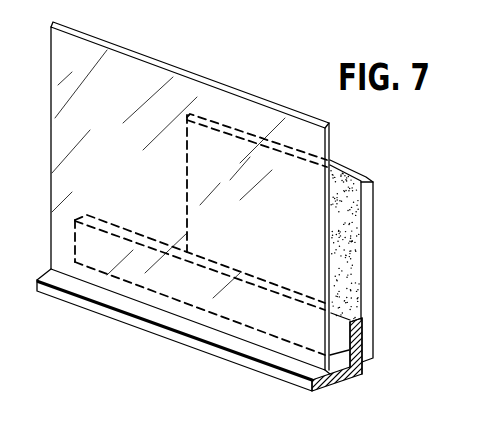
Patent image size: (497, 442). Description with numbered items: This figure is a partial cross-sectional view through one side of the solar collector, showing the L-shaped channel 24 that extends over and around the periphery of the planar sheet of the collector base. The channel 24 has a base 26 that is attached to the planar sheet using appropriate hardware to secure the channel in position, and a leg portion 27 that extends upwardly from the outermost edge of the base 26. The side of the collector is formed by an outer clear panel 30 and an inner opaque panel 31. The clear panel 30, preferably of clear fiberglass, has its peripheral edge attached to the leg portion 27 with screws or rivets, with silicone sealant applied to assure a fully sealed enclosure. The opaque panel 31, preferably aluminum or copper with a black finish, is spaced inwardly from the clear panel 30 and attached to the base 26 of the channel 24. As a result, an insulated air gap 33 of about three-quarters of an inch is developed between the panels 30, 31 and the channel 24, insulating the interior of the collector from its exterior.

The L-shaped channel 24 is at (362, 378).
The base of the channel 26 is at (163, 333).
The leg portion 27 is at (353, 352).
The clear panel 30 is at (250, 110).
The opaque panel 31 is at (372, 276).
The insulated air gap 33 is at (348, 226).